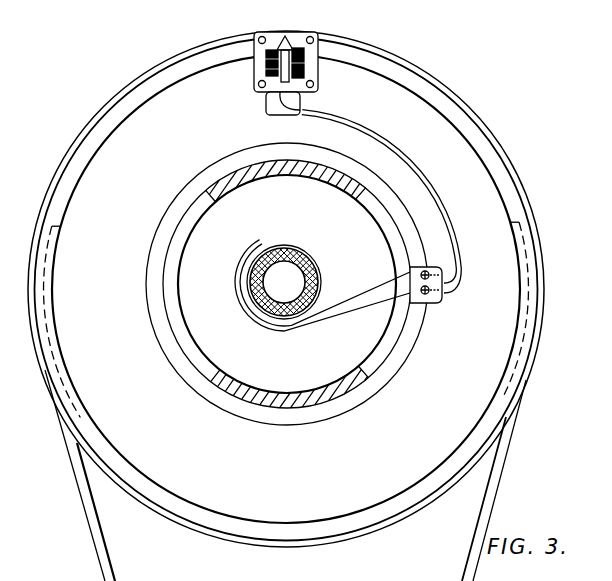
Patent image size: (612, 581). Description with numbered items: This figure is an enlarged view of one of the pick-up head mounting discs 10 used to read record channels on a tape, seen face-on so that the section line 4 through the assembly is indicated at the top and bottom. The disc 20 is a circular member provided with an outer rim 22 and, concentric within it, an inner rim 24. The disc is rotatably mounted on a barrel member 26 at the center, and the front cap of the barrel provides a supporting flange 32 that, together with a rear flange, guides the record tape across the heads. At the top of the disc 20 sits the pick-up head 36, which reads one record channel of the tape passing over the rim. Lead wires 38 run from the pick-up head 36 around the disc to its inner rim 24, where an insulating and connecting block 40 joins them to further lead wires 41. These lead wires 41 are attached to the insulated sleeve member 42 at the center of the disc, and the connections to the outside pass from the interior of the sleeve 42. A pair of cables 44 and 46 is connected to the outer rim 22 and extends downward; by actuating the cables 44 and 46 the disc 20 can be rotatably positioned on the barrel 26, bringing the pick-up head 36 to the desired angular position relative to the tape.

The pick-up head mounting discs 10 is at (528, 91).
The disc 20 is at (156, 177).
The outer rim 22 is at (94, 130).
The inner rim 24 is at (217, 163).
The barrel member 26 is at (270, 393).
The supporting flange 32 is at (42, 200).
The pick-up head 36 is at (322, 68).
The lead wires 38 is at (409, 164).
The insulating and connecting block 40 is at (437, 305).
The lead wires 41 is at (350, 313).
The insulated sleeve member 42 is at (297, 306).
The cable 44 is at (75, 460).
The cable 46 is at (503, 451).
The section line 4- 4 is at (262, 13).